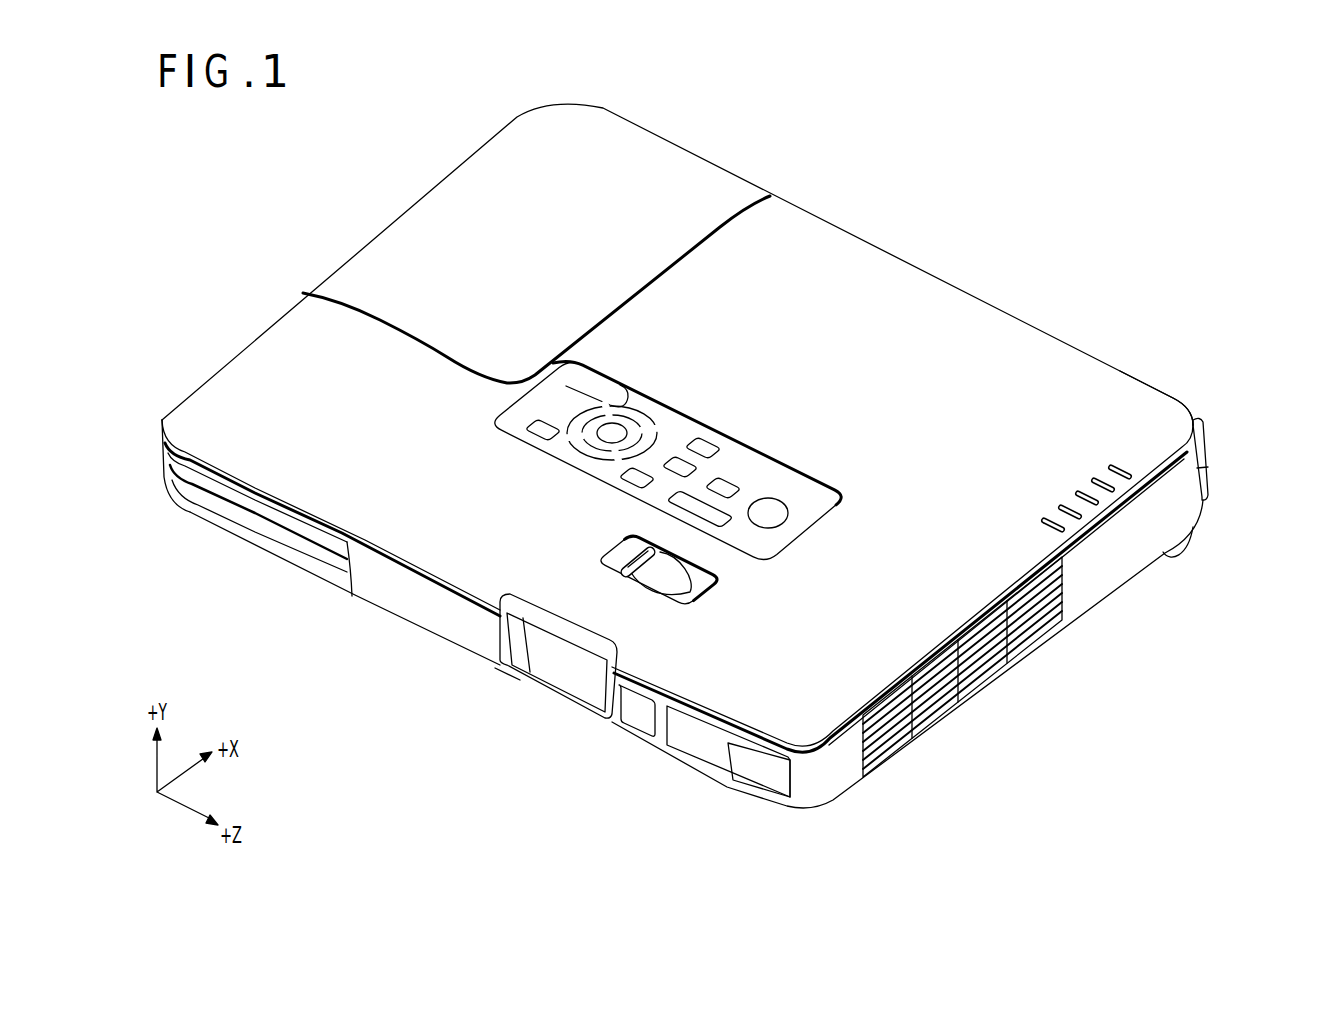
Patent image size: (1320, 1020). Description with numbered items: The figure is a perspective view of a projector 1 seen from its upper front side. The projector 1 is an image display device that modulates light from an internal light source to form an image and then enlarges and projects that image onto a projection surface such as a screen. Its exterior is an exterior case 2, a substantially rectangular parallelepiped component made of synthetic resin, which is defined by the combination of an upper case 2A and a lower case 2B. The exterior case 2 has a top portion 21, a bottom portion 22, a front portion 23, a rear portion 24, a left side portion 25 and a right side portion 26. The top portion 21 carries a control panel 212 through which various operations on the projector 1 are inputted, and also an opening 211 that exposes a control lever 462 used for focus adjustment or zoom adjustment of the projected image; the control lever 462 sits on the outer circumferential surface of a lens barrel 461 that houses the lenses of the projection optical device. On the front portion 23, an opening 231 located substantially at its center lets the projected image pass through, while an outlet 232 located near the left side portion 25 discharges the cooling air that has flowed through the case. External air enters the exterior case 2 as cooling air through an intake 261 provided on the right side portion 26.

The projector 1 is at (866, 129).
The exterior case 2 is at (1058, 297).
The upper case 2A is at (1102, 386).
The lower case 2B is at (1185, 468).
The top portion 21 is at (938, 312).
The bottom portion 22 is at (945, 755).
The front portion 23 is at (427, 617).
The rear portion 24 is at (897, 246).
The left side portion 25 is at (336, 247).
The right side portion 26 is at (1103, 570).
The opening 211 is at (672, 564).
The control panel 212 is at (768, 484).
The opening 231 is at (603, 687).
The outlet 232 is at (347, 578).
The intake 261 is at (996, 672).
The lens barrel 461 is at (672, 587).
The control lever 462 is at (656, 570).